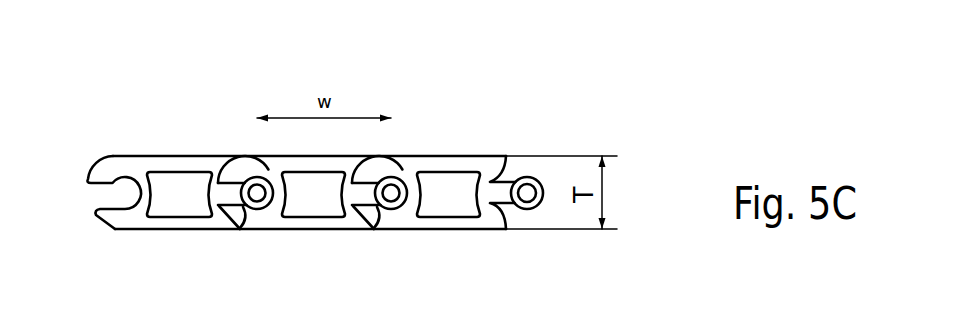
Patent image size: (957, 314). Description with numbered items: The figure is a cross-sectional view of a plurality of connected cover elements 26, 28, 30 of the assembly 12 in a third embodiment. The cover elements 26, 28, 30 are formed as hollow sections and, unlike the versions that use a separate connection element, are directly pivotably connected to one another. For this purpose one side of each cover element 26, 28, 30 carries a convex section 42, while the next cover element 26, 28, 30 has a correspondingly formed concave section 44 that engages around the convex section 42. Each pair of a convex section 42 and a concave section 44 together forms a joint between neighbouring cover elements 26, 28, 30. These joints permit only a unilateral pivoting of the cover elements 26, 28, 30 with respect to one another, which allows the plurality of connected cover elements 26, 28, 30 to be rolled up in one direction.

The chain / link assembly 12 is at (512, 110).
The cover element 26 is at (172, 221).
The cover element 28 is at (321, 221).
The cover element 30 is at (452, 221).
The convex section 42 is at (257, 100).
The concave section 44 is at (254, 156).